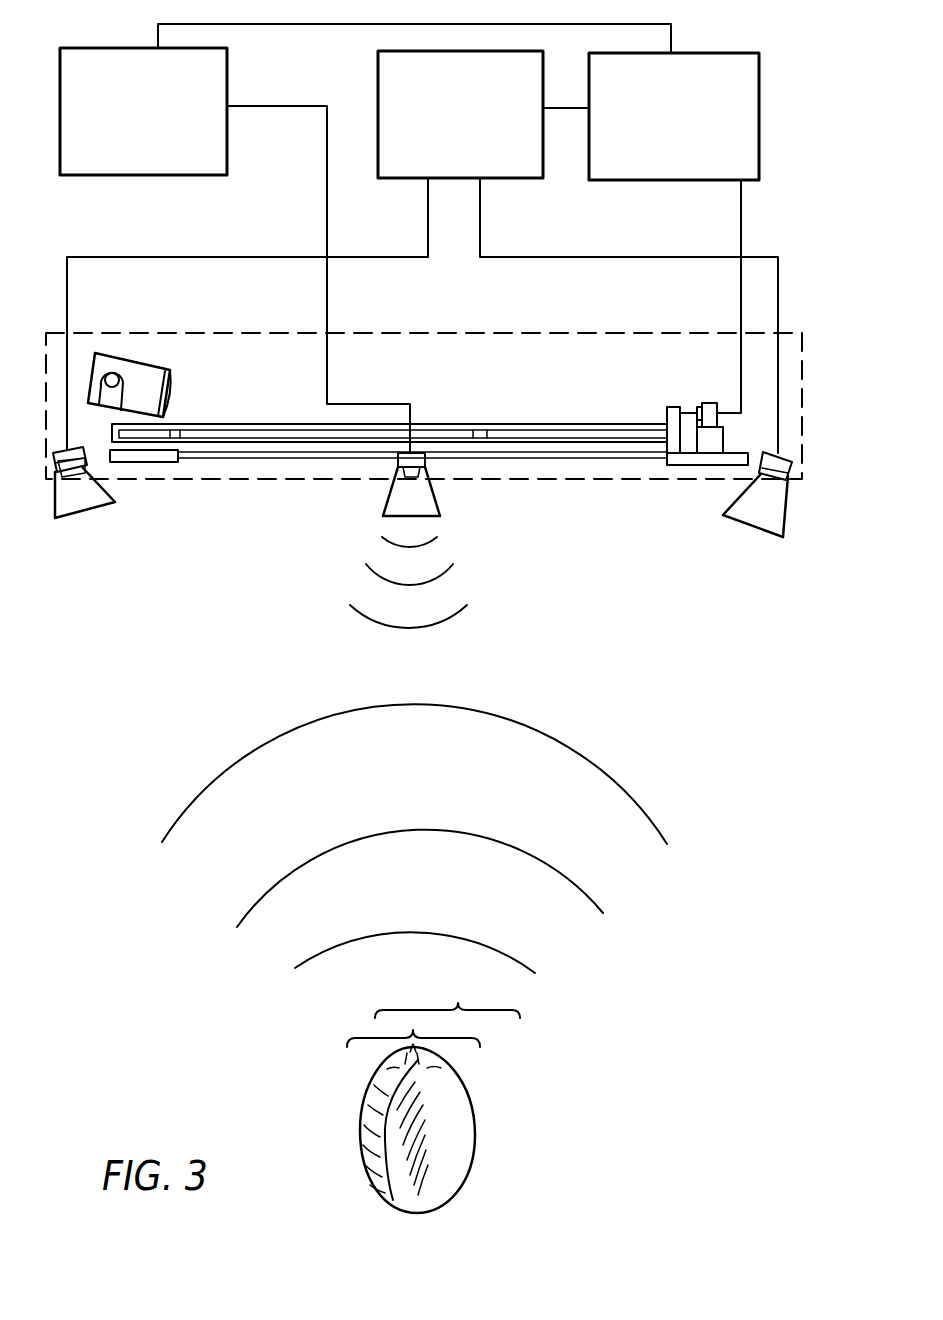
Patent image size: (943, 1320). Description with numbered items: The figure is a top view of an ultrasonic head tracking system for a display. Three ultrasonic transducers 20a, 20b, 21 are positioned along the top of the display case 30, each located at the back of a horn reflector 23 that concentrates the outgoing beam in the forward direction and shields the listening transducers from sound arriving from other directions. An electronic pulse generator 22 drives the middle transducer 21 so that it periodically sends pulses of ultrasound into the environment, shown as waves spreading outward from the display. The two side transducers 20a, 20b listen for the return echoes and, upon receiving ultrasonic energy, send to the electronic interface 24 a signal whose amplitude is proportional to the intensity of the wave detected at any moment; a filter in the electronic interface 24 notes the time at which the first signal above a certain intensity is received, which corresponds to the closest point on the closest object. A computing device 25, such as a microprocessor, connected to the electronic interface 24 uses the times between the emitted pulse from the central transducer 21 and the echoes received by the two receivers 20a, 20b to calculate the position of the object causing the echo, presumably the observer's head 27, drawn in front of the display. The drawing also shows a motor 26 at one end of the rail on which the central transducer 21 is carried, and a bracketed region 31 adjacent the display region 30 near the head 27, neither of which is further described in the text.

The electronic pulse generator 22 is at (120, 48).
The electronic interface 24 is at (378, 80).
The computing device 25 is at (759, 108).
The display case 30 is at (802, 343).
The motor 26 is at (710, 403).
The middle transducer 21 is at (397, 460).
The horn reflectors 23 is at (425, 502).
The receiving transducer 20a is at (50, 475).
The receiving transducer 20b is at (780, 462).
The measurement region 31 is at (447, 992).
The observer's head 27 is at (460, 1167).